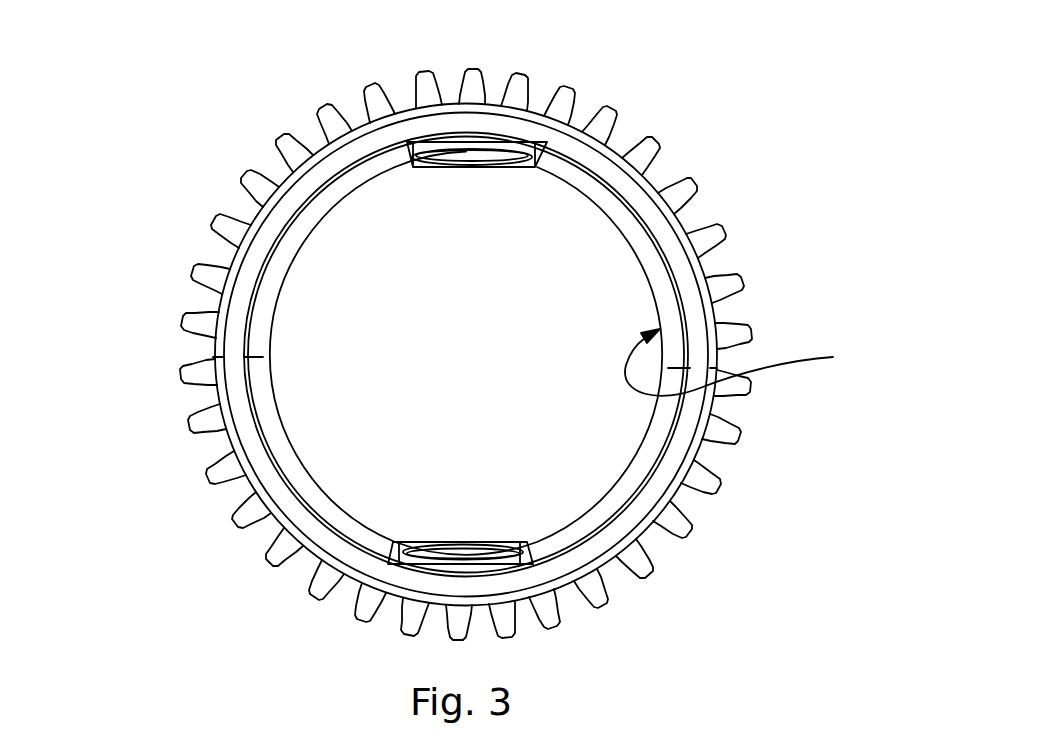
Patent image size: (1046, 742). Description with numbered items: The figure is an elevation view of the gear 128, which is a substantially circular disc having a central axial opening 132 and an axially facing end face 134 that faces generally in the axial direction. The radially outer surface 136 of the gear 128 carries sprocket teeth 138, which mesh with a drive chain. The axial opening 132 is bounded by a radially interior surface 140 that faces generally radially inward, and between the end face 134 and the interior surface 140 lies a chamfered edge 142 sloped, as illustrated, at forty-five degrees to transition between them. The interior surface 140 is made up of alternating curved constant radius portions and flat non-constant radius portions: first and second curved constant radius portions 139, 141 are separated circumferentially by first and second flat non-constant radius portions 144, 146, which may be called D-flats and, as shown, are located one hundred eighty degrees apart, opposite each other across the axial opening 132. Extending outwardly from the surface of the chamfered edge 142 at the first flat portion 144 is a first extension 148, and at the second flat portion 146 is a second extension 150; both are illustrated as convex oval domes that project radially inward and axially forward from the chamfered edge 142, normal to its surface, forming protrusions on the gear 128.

The gear 128 is at (693, 182).
The central axial opening 132 is at (497, 381).
The end face 134 is at (683, 273).
The radially outer surface 136 is at (663, 148).
The sprocket teeth 138 is at (613, 118).
The first curved constant radius portion 139 is at (283, 425).
The radially interior surface 140 is at (757, 362).
The second curved constant radius portion 141 is at (683, 510).
The chamfered edge 142 is at (675, 437).
The first flat non-constant radius portion 144 is at (405, 542).
The second flat non-constant radius portion 146 is at (410, 167).
The first extension 148 is at (473, 550).
The second extension 150 is at (480, 157).